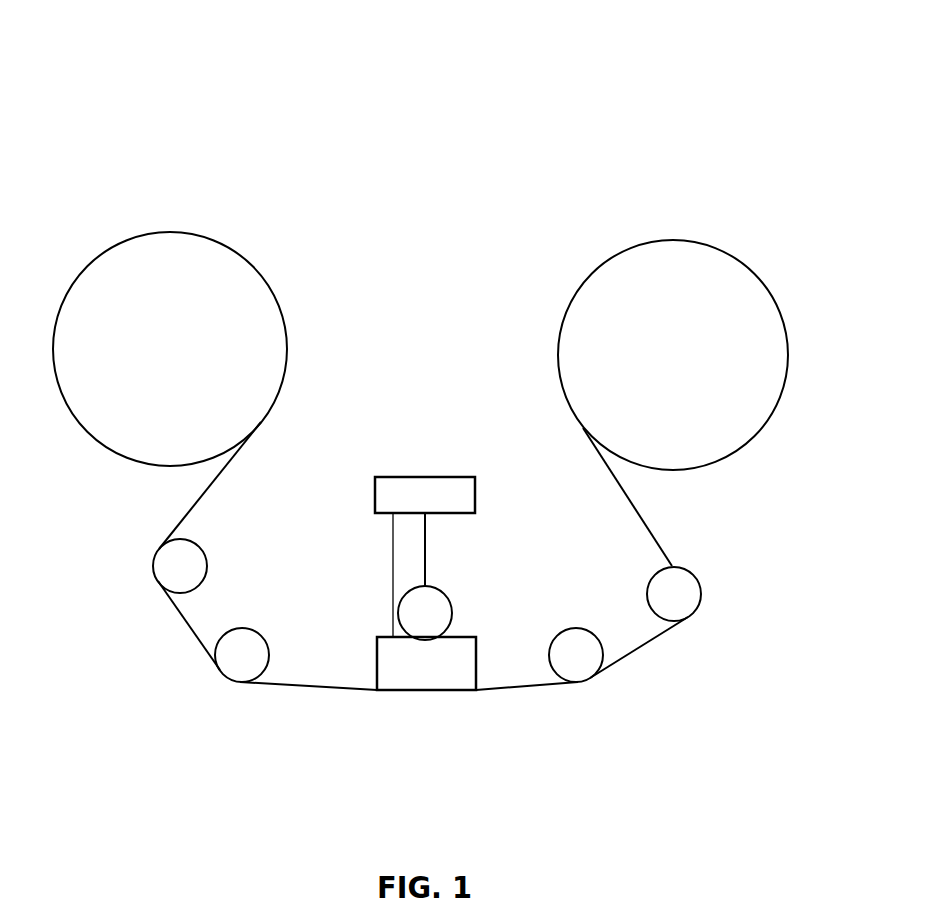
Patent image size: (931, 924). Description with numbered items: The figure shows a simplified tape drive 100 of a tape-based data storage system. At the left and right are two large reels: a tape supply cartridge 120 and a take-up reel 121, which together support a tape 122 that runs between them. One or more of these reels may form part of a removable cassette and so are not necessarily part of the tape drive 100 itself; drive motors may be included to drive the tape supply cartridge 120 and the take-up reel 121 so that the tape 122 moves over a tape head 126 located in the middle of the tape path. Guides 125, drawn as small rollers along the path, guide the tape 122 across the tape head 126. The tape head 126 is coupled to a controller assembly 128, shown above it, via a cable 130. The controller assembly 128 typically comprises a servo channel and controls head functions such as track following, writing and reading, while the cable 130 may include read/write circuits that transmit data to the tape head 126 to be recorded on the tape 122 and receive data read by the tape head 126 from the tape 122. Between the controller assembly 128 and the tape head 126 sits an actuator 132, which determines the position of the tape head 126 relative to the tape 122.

The tape drive 100 is at (438, 92).
The tape supply cartridge 120 is at (168, 232).
The take-up reel 121 is at (672, 240).
The tape 122 is at (312, 688).
The guides 125 is at (208, 557).
The tape head 126 is at (477, 662).
The controller assembly 128 is at (424, 477).
The cable 130 is at (398, 612).
The actuator 132 is at (445, 593).